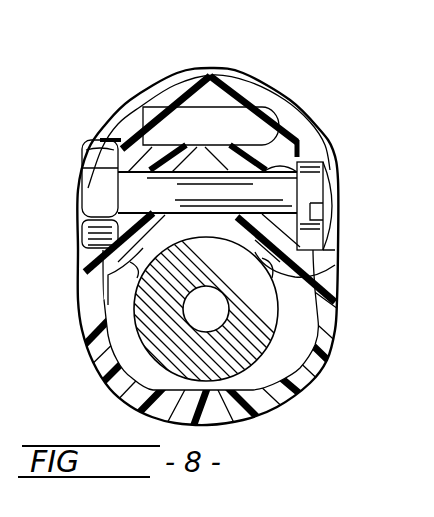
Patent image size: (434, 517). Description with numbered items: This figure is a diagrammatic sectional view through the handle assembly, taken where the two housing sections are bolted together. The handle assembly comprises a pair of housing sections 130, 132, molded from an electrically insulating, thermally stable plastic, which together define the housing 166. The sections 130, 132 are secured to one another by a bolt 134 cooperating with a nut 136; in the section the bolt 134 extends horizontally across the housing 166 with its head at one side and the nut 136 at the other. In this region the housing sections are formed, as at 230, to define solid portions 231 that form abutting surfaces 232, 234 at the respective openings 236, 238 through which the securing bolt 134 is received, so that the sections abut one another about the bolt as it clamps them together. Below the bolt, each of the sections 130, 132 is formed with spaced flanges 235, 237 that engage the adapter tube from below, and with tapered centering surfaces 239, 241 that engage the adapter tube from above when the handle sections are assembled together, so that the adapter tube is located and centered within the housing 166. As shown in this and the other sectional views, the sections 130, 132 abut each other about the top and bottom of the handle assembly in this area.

The housing section 130 is at (333, 295).
The housing section 132 is at (107, 363).
The bolt 134 is at (323, 173).
The nut 136 is at (95, 197).
The housing 166 is at (290, 105).
The formed portion of housing sections 230 is at (140, 105).
The solid portions 231 is at (185, 152).
The abutting surface 232 is at (209, 105).
The abutting surface 234 is at (212, 177).
The flange 235 is at (297, 330).
The opening 236 is at (300, 152).
The flange 237 is at (118, 328).
The opening 238 is at (143, 170).
The tapered centering surface 239 is at (300, 273).
The tapered centering surface 241 is at (108, 280).